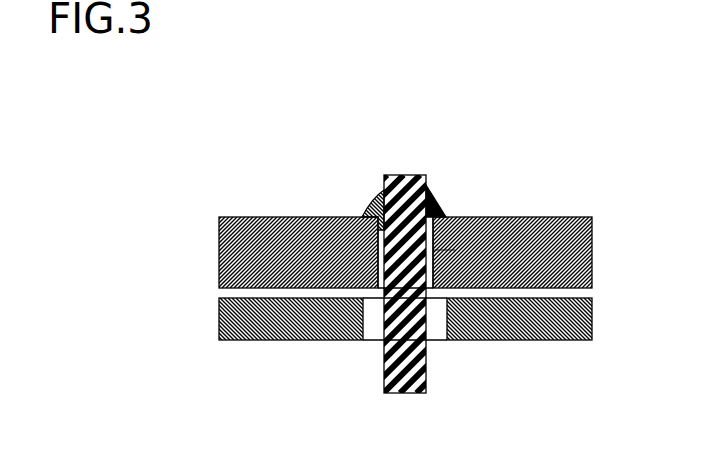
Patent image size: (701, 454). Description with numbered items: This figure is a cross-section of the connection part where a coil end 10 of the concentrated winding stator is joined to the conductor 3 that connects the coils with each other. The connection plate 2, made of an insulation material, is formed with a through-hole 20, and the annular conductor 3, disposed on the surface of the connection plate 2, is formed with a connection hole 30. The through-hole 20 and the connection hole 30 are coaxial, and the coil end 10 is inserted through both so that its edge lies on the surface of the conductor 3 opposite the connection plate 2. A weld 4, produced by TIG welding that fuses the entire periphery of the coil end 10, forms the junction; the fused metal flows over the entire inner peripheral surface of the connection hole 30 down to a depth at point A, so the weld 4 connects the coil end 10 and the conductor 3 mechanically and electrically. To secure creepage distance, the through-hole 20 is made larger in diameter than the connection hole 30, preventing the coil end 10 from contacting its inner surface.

The connection plate 2 is at (317, 318).
The conductor 3 is at (335, 233).
The welded part 4 is at (440, 206).
The coil end 10 is at (403, 176).
The through-hole 20 is at (436, 322).
The connection hole 30 is at (435, 260).
The point A is at (442, 253).